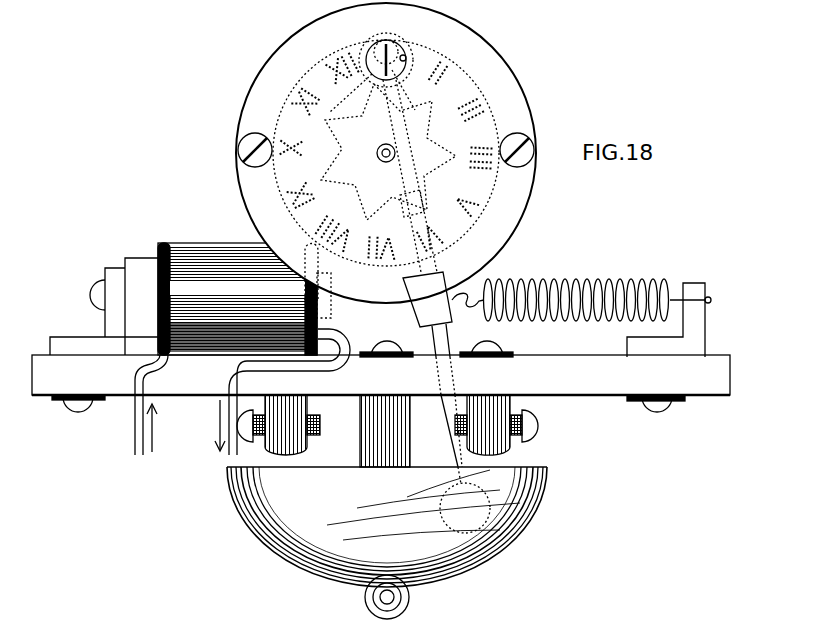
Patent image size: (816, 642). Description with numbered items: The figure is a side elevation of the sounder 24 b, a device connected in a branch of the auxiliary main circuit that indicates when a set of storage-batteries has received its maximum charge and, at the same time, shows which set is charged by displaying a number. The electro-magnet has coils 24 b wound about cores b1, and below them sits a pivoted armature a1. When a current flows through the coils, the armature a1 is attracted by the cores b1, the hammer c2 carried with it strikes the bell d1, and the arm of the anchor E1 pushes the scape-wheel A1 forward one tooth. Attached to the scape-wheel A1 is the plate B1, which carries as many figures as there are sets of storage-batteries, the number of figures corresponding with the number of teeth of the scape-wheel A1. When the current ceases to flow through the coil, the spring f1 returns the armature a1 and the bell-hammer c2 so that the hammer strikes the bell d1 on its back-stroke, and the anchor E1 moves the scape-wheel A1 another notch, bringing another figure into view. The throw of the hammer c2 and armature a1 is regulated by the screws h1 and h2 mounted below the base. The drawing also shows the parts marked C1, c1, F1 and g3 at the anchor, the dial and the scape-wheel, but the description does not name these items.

The anchor E1 is at (366, 47).
The escapement lever C1 is at (401, 56).
The pivot pin c1 is at (430, 55).
The dial screw F1 is at (516, 131).
The scape-wheel A1 is at (388, 152).
The plate B1 is at (386, 153).
The pawl g3 is at (330, 155).
The sounder 24 is at (237, 299).
The coils b is at (237, 299).
The cores b1 is at (322, 318).
The armature a1 is at (420, 313).
The spring f1 is at (560, 287).
The screw h1 is at (291, 425).
The screw h2 is at (506, 425).
The bell d1 is at (387, 543).
The hammer c2 is at (465, 464).